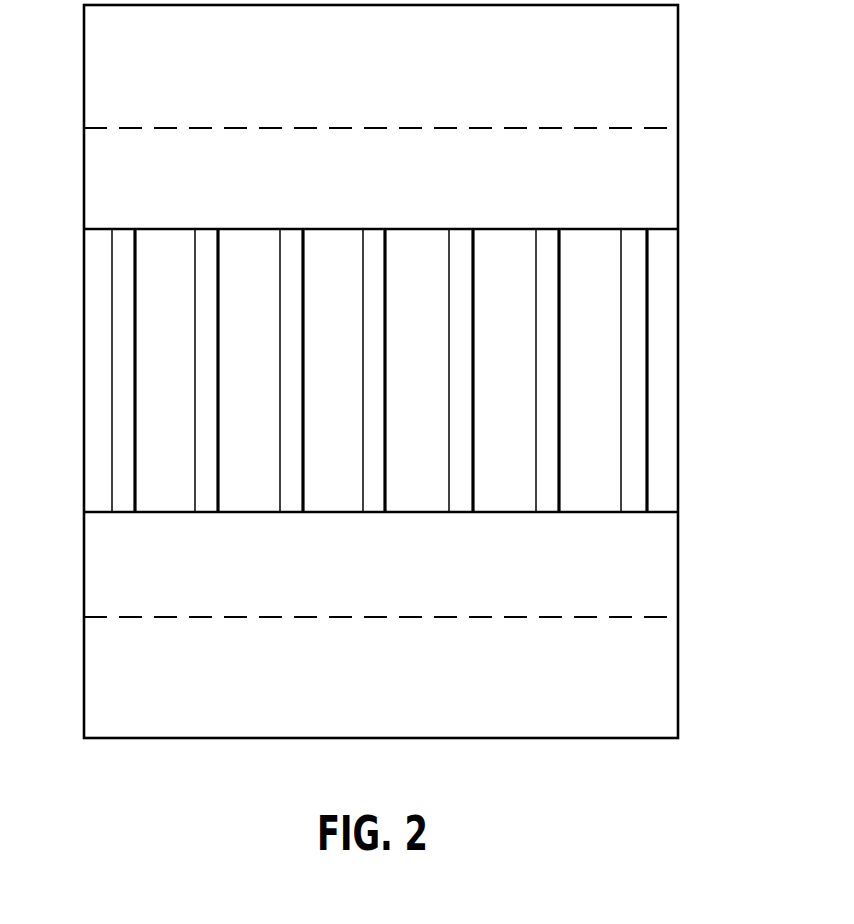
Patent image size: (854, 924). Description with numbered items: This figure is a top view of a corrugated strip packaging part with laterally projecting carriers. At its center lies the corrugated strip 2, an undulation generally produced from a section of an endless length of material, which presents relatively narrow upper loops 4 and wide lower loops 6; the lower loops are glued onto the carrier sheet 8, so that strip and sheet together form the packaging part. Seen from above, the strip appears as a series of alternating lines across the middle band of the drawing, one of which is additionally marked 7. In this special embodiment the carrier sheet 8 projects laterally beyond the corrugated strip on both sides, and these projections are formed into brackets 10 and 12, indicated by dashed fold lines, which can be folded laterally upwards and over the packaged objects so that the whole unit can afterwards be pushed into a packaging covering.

The corrugated strip 2 is at (340, 340).
The upper loops 4 is at (207, 403).
The lower loops 6 is at (433, 405).
The grating strip 7 is at (548, 413).
The carrier sheet 8 is at (642, 578).
The bracket 10 is at (389, 192).
The bracket 12 is at (389, 80).